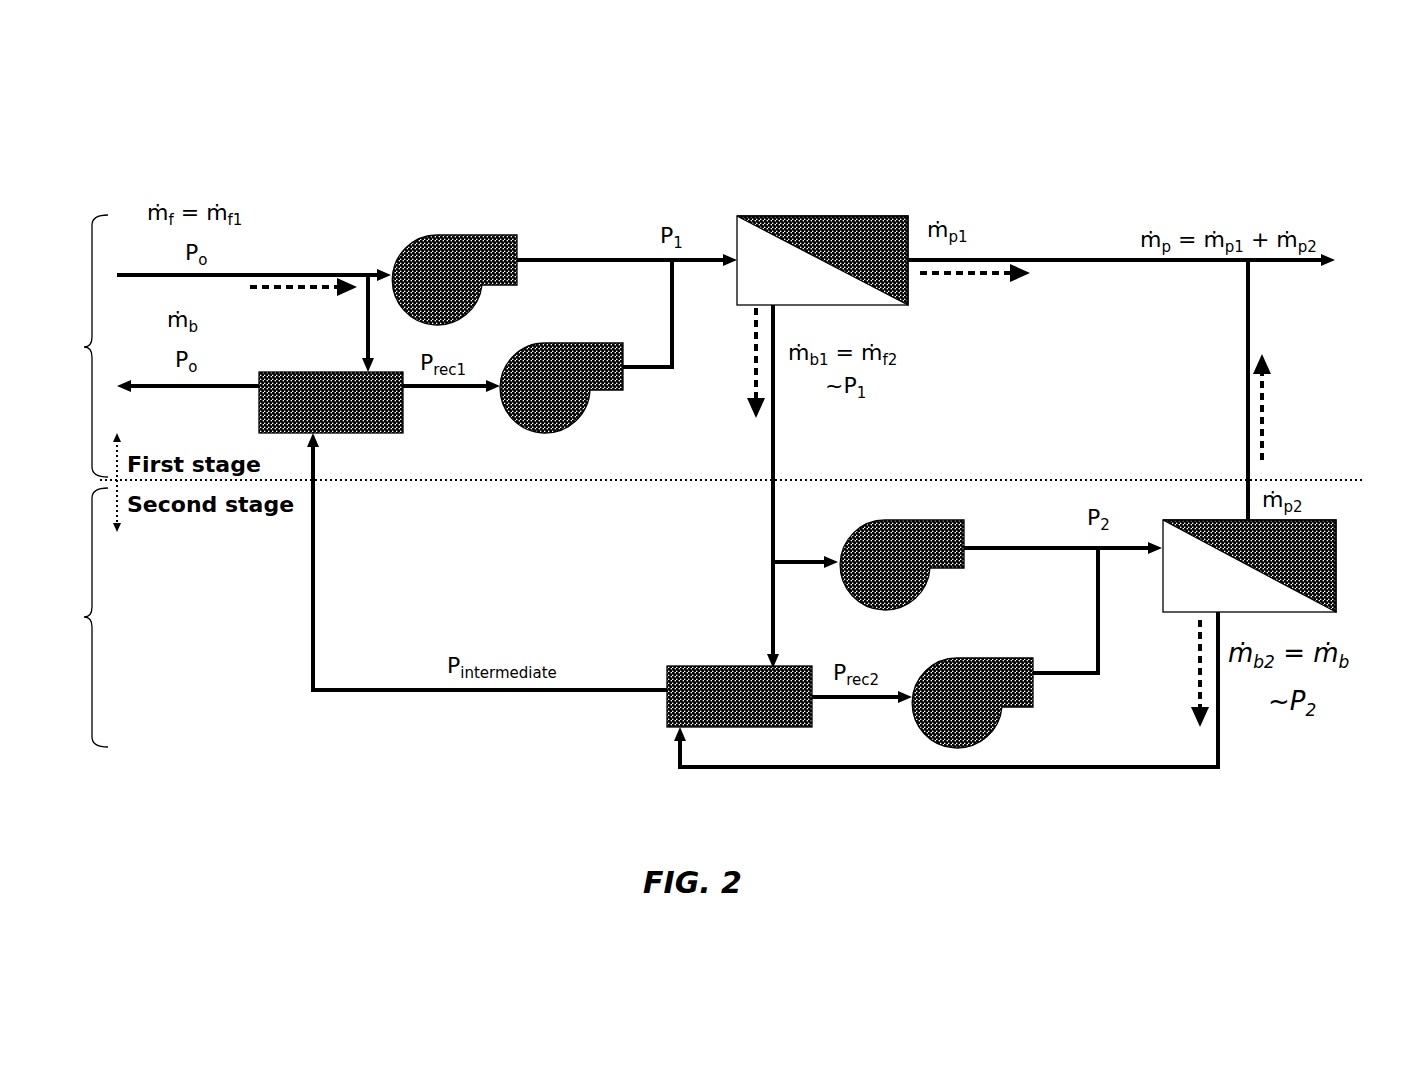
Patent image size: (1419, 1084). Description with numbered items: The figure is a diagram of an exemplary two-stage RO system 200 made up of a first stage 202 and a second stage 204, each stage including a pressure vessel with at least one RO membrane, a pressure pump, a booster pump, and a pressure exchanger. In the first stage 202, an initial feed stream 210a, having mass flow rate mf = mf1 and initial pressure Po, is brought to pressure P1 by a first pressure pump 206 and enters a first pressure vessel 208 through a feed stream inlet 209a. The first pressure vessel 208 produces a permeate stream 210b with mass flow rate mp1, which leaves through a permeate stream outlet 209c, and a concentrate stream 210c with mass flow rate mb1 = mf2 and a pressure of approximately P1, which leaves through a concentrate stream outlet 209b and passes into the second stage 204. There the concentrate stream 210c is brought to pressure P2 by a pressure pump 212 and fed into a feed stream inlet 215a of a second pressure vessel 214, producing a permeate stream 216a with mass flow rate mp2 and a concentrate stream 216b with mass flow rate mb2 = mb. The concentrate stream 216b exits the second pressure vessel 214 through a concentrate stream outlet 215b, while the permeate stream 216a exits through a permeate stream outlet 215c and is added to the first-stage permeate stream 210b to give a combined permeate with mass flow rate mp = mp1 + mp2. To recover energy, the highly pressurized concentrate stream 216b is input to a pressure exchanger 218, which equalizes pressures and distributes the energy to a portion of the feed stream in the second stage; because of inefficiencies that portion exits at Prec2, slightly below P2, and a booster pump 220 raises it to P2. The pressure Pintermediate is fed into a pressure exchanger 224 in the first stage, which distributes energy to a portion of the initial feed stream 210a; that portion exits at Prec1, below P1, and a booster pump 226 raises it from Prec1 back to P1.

The two-stage RO system 200 is at (1052, 146).
The first stage 202 is at (74, 346).
The second stage 204 is at (74, 617).
The first pressure pump 206 is at (466, 235).
The first pressure vessel 208 is at (772, 216).
The feed stream inlet 209a is at (730, 234).
The concentrate stream outlet 209b is at (746, 318).
The permeate stream outlet 209c is at (914, 228).
The initial feed stream 210a is at (272, 292).
The permeate stream 210b is at (980, 277).
The concentrate stream 210c is at (760, 392).
The pressure pump 212 is at (964, 520).
The second pressure vessel 214 is at (1336, 568).
The feed stream inlet 215a is at (1156, 532).
The concentrate stream outlet 215b is at (1186, 620).
The permeate stream outlet 215c is at (1236, 508).
The permeate stream 216a is at (1262, 425).
The concentrate stream 216b is at (1207, 708).
The pressure exchanger 218 is at (667, 705).
The booster pump 220 is at (1033, 700).
The pressure exchanger 224 is at (403, 405).
The booster pump 226 is at (578, 403).